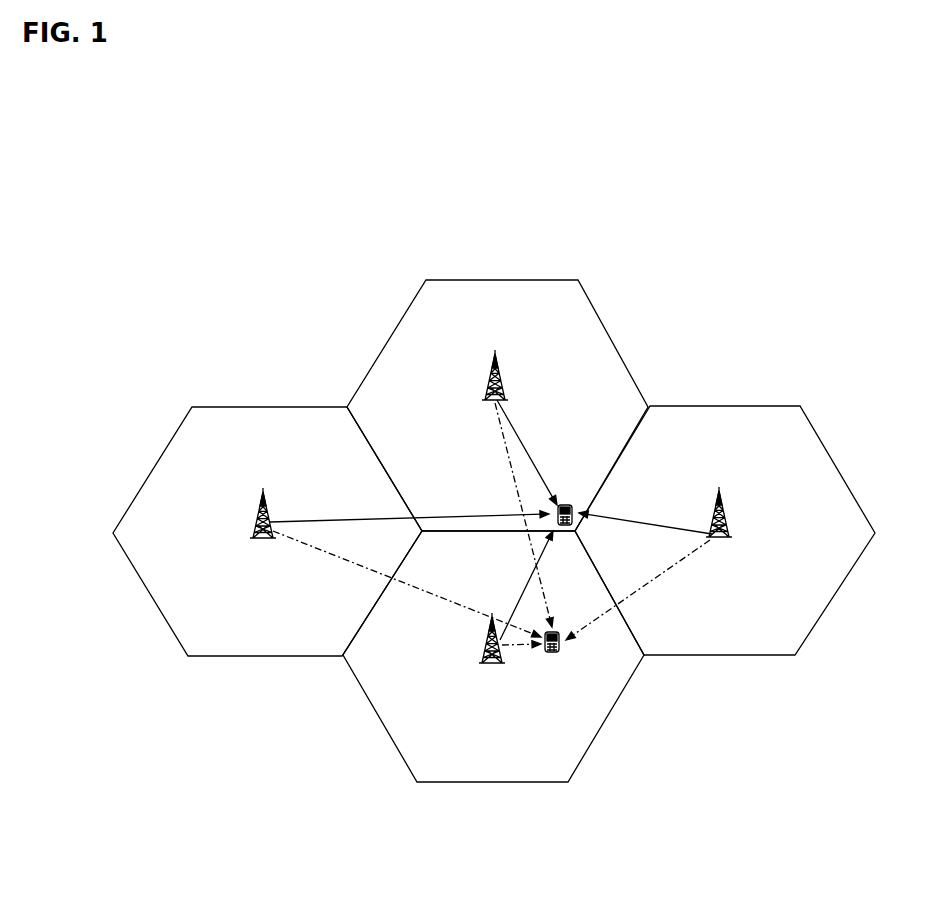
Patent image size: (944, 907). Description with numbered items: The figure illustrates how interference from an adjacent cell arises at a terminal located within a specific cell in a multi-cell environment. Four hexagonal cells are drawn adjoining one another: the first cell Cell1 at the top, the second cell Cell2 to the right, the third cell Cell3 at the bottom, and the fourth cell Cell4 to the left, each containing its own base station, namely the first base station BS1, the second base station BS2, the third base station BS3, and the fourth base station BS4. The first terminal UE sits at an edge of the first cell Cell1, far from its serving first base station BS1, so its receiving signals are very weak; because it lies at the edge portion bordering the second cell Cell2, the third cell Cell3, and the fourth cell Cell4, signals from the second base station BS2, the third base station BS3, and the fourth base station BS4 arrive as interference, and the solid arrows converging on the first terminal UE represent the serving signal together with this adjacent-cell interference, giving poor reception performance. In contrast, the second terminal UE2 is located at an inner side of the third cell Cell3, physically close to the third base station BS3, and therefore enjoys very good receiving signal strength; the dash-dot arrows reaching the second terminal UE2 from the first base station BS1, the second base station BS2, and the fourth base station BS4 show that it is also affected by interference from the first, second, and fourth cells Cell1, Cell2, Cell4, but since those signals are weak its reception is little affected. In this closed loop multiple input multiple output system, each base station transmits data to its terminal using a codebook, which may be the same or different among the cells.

The cell 1 Cell1 is at (497, 405).
The cell 2 Cell2 is at (725, 530).
The cell 3 Cell3 is at (493, 656).
The cell 4 Cell4 is at (267, 531).
The base station 1 BS1 is at (479, 375).
The base station 2 BS2 is at (733, 512).
The base station 3 BS3 is at (474, 641).
The base station 4 BS4 is at (244, 514).
The terminal 1 UE is at (568, 506).
The terminal 2 UE2 is at (557, 651).